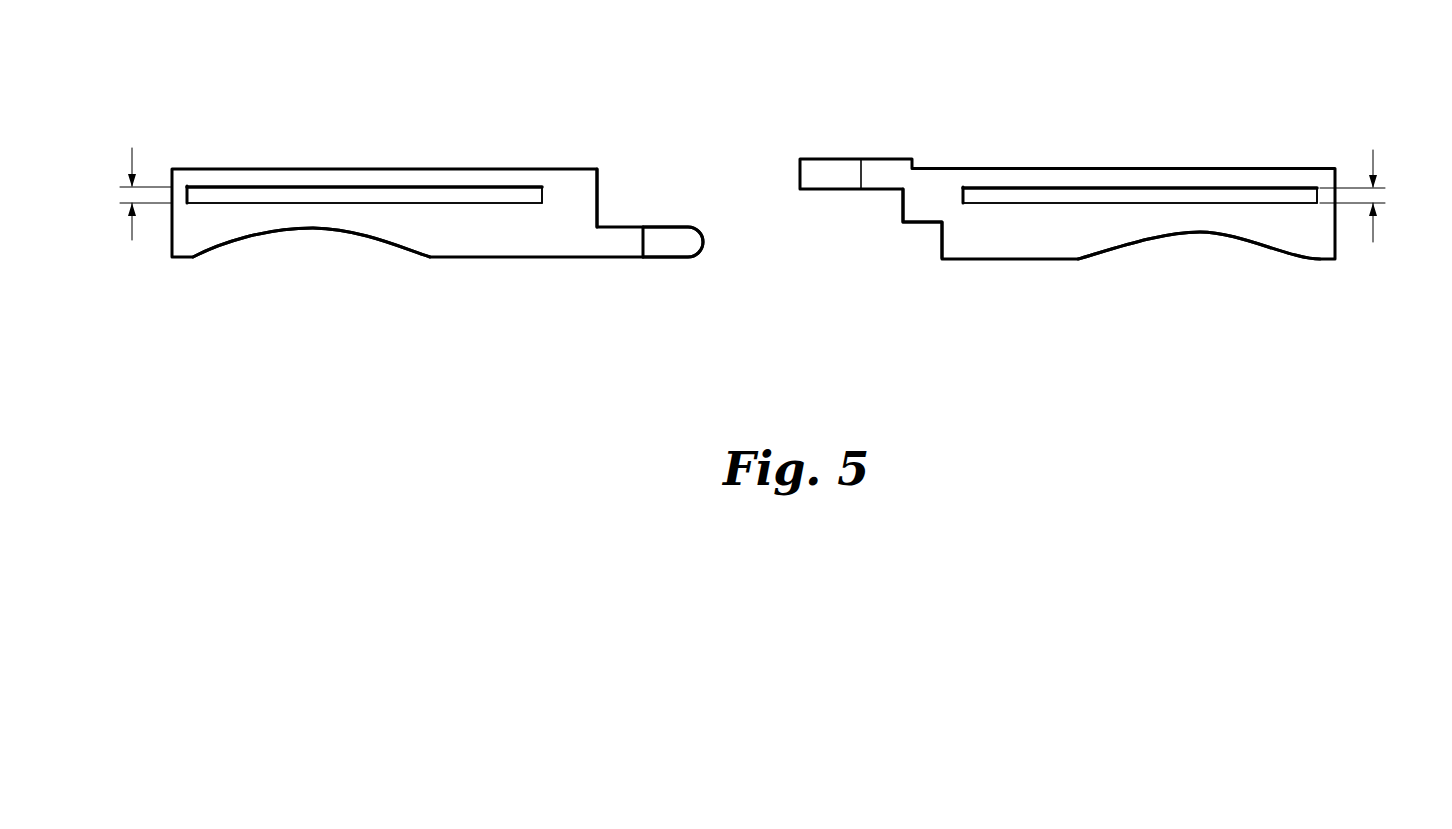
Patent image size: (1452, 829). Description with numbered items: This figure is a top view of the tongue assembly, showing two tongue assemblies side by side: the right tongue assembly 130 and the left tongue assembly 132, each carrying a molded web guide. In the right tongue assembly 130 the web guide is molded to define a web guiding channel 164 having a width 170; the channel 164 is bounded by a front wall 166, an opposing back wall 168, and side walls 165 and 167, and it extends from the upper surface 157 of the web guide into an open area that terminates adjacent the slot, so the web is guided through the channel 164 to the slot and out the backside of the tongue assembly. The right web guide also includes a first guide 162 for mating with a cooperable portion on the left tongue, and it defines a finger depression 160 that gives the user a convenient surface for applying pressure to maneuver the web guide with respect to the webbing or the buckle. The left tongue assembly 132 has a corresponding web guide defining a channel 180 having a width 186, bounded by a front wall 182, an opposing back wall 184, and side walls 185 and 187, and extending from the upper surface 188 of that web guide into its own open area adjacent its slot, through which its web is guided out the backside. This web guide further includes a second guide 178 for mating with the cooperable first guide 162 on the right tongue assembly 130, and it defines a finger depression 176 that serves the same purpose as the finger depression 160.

The right tongue assembly 130 is at (1037, 168).
The first clamp member 132 is at (242, 166).
The upper surface 157 is at (942, 198).
The finger depression 160 is at (1123, 247).
The first guide 162 is at (861, 158).
The web guiding channel 164 is at (1270, 197).
The side wall 165 is at (1313, 195).
The front wall 166 is at (1060, 205).
The side wall 167 is at (980, 202).
The back wall 168 is at (1120, 185).
The width 170 is at (1373, 157).
The finger depression 176 is at (330, 232).
The second guide 178 is at (658, 239).
The channel 180 is at (211, 193).
The front wall 182 is at (482, 203).
The back wall 184 is at (343, 185).
The side wall 185 is at (205, 197).
The width 186 is at (131, 157).
The side wall 187 is at (527, 205).
The upper surface 188 is at (557, 192).